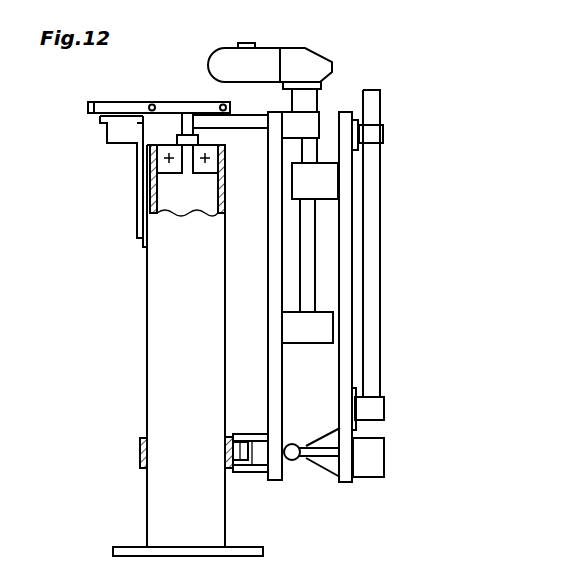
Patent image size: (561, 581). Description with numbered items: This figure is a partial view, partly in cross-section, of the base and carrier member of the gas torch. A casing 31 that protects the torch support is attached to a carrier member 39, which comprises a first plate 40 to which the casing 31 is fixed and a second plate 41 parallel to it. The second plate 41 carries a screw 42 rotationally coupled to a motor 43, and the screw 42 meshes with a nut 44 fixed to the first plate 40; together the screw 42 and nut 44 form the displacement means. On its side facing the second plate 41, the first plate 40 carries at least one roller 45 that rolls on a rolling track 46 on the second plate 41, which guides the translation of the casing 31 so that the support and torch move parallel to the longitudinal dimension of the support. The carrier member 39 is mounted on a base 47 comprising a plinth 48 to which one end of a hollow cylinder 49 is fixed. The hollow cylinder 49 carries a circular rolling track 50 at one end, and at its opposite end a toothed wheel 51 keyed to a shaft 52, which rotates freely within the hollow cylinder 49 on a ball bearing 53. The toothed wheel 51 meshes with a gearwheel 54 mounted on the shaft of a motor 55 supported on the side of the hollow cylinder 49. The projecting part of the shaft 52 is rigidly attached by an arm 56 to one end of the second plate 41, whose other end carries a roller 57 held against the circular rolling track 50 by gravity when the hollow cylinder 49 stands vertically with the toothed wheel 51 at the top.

The casing 31 is at (383, 115).
The carrier member 39 is at (334, 282).
The first plate 40 is at (345, 360).
The second plate 41 is at (268, 390).
The screw 42 is at (308, 236).
The motor 43 is at (268, 52).
The nut 44 is at (330, 178).
The roller 45 is at (292, 462).
The rolling track 46 is at (283, 422).
The base 47 is at (143, 392).
The plinth 48 is at (120, 547).
The hollow cylinder 49 is at (160, 357).
The circular rolling track 50 is at (140, 458).
The toothed wheel 51 is at (158, 105).
The shaft 52 is at (184, 121).
The ball bearing 53 is at (165, 172).
The gearwheel 54 is at (112, 101).
The motor 55 is at (107, 137).
The arm 56 is at (256, 128).
The roller 57 is at (258, 455).